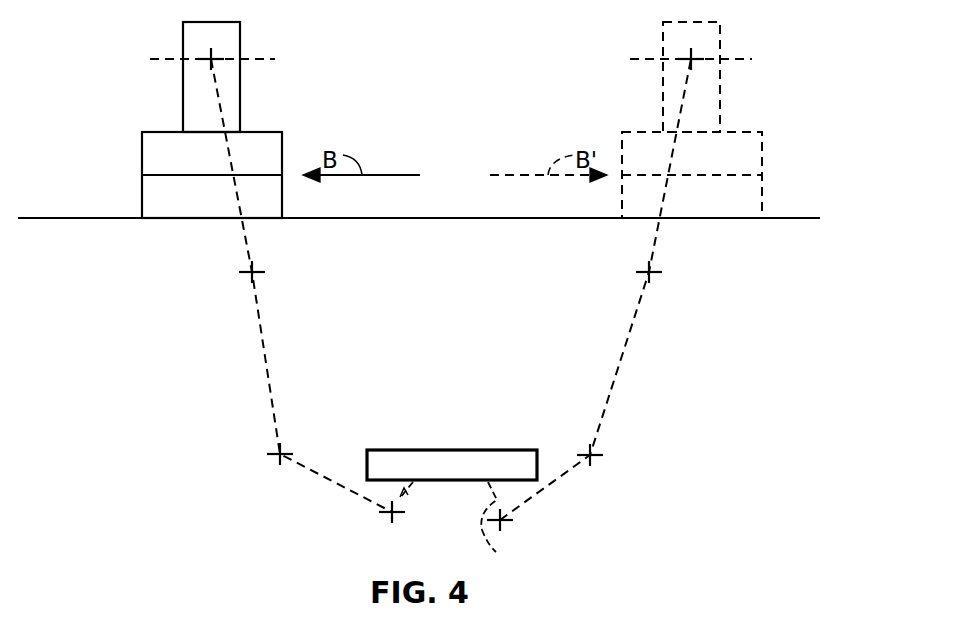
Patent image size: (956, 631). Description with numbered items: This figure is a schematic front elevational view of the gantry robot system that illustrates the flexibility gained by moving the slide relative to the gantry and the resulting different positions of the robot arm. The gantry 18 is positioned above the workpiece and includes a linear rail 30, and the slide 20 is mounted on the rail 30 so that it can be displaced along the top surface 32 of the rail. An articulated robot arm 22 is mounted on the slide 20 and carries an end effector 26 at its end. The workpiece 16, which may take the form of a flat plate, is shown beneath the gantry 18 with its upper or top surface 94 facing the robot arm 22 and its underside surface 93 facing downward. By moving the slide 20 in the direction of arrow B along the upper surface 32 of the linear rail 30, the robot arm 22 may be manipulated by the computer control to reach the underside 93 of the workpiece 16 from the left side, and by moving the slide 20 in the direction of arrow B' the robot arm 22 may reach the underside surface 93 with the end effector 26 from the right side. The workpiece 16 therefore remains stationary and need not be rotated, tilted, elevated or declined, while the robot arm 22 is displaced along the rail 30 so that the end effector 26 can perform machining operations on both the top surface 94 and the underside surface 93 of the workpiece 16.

The workpiece 16 is at (408, 462).
The gantry 18 is at (778, 217).
The slide 20 is at (207, 208).
The articulated robot arm 22 is at (240, 43).
The end effector 26 is at (405, 509).
The linear rail 30 is at (793, 221).
The top surface of the rail 32 is at (90, 217).
The underside surface of the workpiece 93 is at (446, 474).
The top surface of the workpiece 94 is at (485, 451).